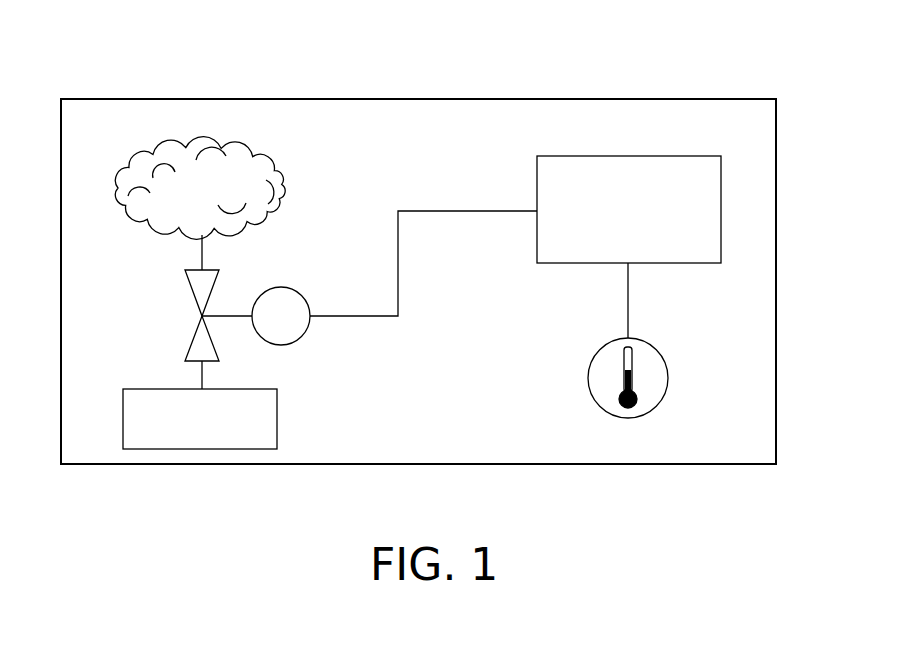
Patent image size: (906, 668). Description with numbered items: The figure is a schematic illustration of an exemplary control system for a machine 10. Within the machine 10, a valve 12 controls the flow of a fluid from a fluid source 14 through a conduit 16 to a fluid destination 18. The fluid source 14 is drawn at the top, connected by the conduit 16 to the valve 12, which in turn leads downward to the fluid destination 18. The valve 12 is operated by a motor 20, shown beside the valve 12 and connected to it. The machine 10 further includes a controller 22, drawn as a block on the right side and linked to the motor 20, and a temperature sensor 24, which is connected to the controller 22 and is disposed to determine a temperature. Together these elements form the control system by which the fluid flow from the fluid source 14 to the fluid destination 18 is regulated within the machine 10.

The machine 10 is at (586, 98).
The valve 12 is at (193, 292).
The fluid source 14 is at (213, 203).
The conduit 16 is at (202, 247).
The fluid destination 18 is at (213, 430).
The motor 20 is at (294, 327).
The controller 22 is at (648, 222).
The temperature sensor 24 is at (590, 371).